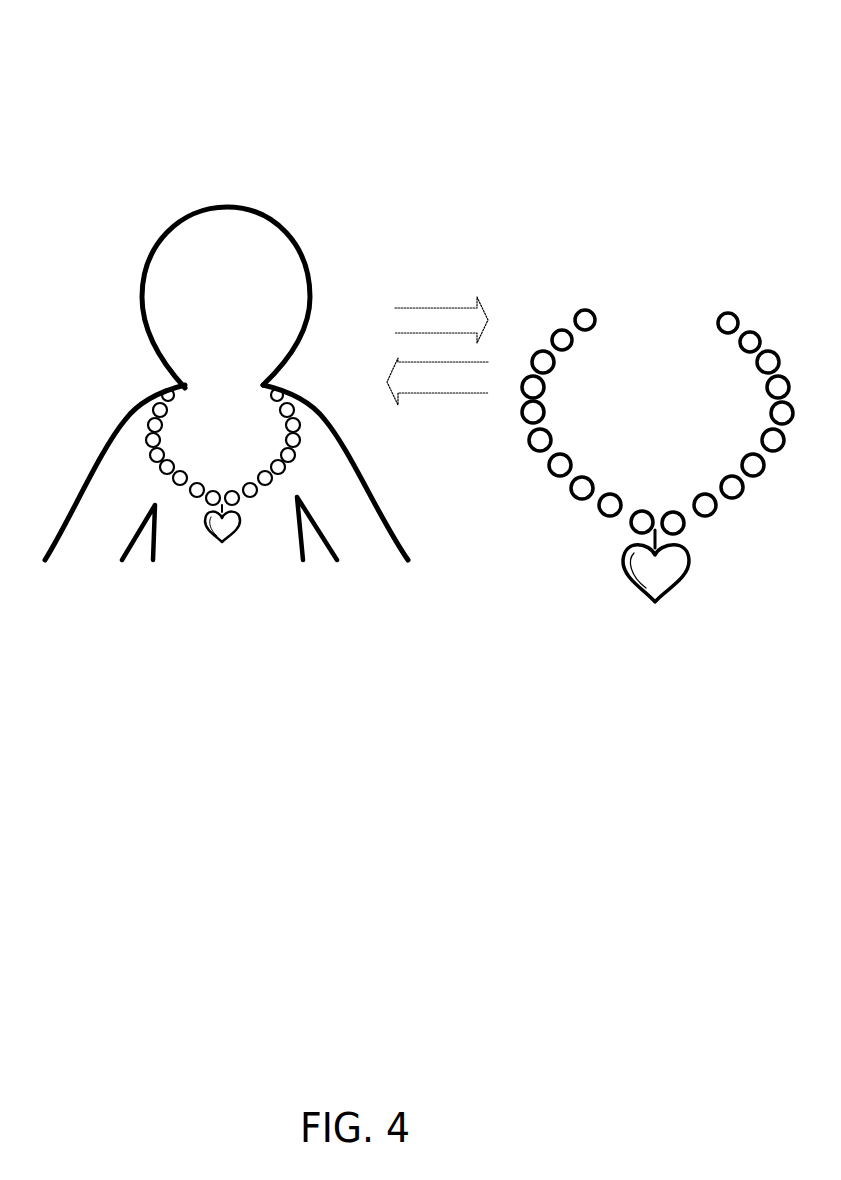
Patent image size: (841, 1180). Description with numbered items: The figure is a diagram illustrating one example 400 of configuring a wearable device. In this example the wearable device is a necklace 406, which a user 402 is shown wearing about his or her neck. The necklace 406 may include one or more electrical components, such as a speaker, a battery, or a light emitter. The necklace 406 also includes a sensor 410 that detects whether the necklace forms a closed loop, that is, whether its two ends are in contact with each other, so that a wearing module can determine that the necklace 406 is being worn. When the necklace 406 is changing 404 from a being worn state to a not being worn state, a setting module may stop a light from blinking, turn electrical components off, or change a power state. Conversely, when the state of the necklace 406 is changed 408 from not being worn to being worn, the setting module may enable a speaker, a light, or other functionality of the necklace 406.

The example of configuring a wearable device 400 is at (92, 87).
The user 402 is at (170, 270).
The changing from a being worn state to a not being worn state 404 is at (432, 310).
The necklace 406 is at (222, 542).
The changing from not being worn to being worn 408 is at (457, 395).
The sensor 410 is at (597, 318).